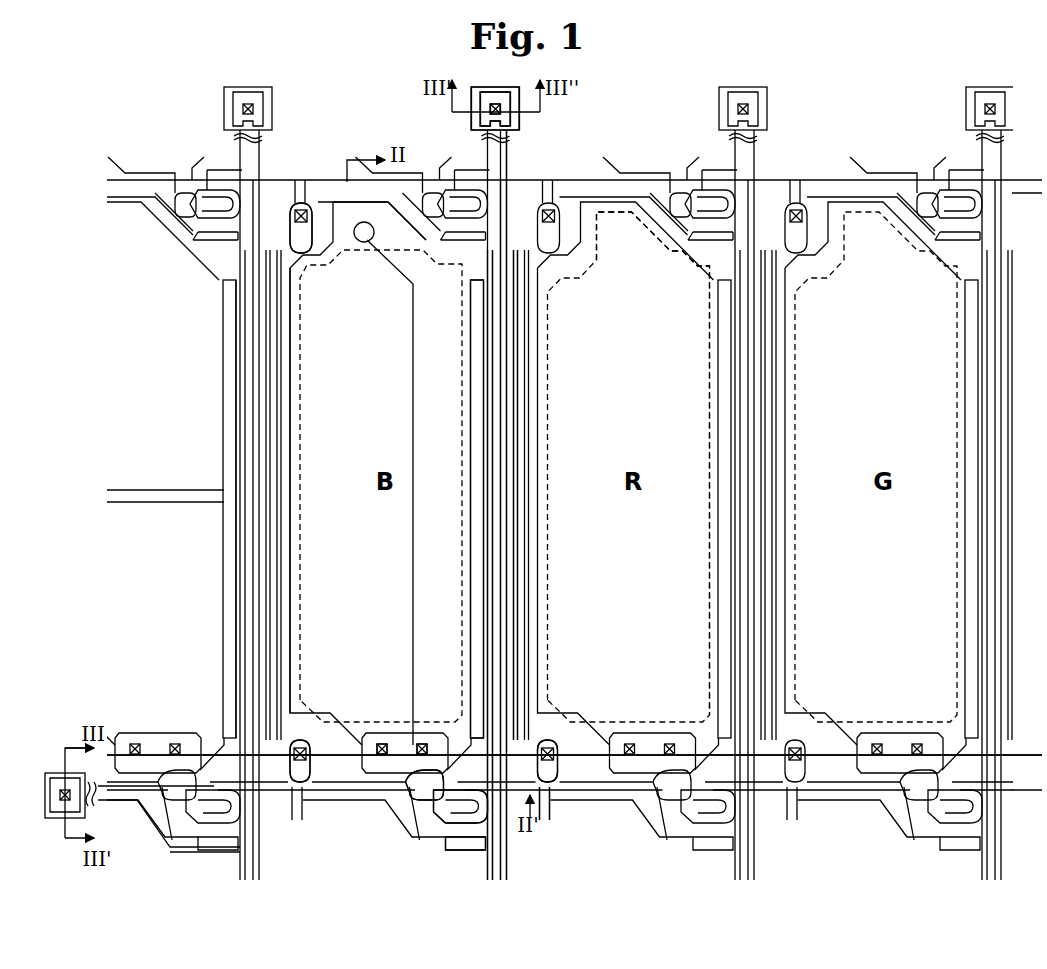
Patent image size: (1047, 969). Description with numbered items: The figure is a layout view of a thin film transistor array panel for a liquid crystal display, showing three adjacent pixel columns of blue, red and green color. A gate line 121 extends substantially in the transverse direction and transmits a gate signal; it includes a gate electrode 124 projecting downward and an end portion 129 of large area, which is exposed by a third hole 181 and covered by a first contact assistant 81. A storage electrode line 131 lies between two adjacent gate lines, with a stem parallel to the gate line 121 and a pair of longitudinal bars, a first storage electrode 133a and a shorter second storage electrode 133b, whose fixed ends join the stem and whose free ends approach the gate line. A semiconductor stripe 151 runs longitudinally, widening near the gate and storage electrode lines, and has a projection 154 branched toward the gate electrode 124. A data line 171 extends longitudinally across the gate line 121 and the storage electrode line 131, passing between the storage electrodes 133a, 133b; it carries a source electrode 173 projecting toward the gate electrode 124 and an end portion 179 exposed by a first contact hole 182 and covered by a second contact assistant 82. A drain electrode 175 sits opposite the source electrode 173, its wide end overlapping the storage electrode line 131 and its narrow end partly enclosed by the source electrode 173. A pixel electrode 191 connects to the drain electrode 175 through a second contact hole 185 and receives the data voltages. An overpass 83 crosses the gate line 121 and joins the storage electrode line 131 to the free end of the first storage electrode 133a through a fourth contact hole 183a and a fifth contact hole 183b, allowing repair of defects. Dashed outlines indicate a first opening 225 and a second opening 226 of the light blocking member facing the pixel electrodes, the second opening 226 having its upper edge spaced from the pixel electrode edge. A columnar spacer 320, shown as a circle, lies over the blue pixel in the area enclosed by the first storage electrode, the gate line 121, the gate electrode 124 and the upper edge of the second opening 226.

The first contact assistant 81 is at (50, 818).
The third hole 181 is at (60, 795).
The end portion 129 is at (60, 786).
The gate line 121 is at (352, 800).
The gate electrode 124 is at (514, 824).
The second contact assistant 82 is at (519, 128).
The first contact hole 182 is at (497, 103).
The end portion 179 is at (478, 120).
The data line 171 is at (507, 370).
The semiconductor stripe 151 is at (503, 400).
The projection 154 is at (442, 852).
The source electrode 173 is at (471, 852).
The drain electrode 175 is at (430, 848).
The pixel electrode 191 is at (481, 440).
The storage electrode line 131 is at (548, 740).
The first storage electrode 133a is at (294, 328).
The second storage electrode 133b is at (472, 327).
The fourth contact hole 183a is at (303, 203).
The fifth contact hole 183b is at (303, 742).
The second contact hole 185 is at (422, 742).
The overpass 83 is at (318, 230).
The first opening 225 is at (620, 210).
The second opening 226 is at (297, 388).
The columnar spacer 320 is at (362, 243).